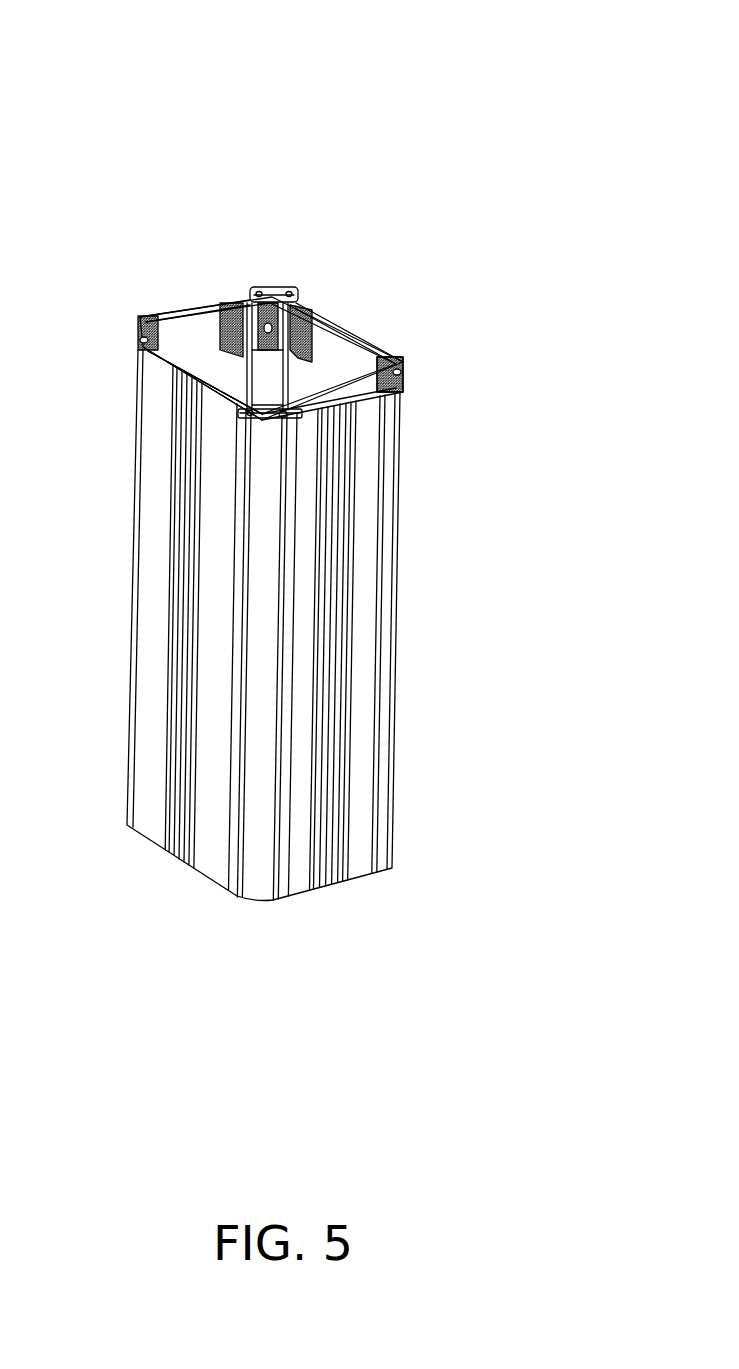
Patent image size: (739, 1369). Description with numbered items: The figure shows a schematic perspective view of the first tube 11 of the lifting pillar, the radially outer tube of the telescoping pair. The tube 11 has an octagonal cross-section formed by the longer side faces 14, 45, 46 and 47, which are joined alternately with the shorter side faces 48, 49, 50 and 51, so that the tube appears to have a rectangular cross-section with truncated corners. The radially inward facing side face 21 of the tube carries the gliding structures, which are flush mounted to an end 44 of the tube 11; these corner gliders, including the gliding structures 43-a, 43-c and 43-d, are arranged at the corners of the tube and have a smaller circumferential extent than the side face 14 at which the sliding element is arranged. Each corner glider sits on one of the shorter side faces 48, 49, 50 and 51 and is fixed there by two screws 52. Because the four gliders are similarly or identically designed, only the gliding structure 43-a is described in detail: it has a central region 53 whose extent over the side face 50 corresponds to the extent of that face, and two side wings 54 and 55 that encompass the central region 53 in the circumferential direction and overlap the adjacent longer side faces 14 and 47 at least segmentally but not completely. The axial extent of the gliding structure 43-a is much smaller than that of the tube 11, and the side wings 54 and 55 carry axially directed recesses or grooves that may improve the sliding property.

The first tube 11 is at (380, 308).
The side face 14 is at (347, 330).
The radially inward facing side face 21 is at (335, 362).
The gliding structure 43-a is at (297, 313).
The gliding structure 43-c is at (267, 420).
The gliding structure 43-d is at (142, 318).
The end 44 is at (355, 403).
The side face 45 is at (338, 665).
The side face 46 is at (193, 743).
The side face 47 is at (208, 312).
The side face 48 is at (260, 873).
The side face 49 is at (398, 586).
The side face 50 is at (268, 378).
The side face 51 is at (148, 342).
The screws 52 is at (398, 348).
The central region 53 is at (286, 290).
The side wing 54 is at (320, 322).
The side wing 55 is at (264, 290).